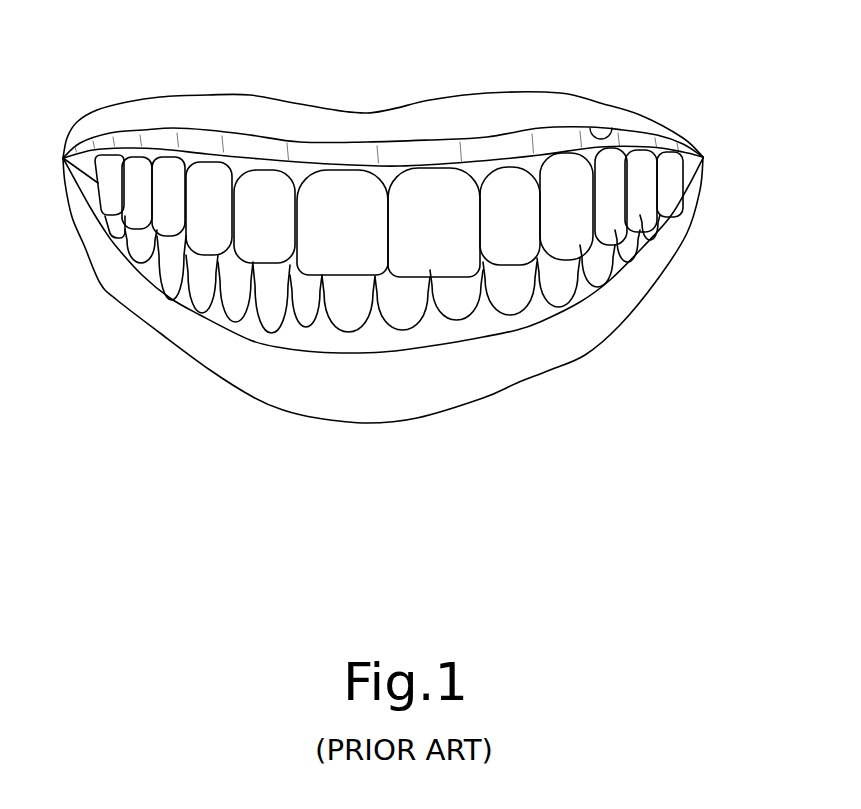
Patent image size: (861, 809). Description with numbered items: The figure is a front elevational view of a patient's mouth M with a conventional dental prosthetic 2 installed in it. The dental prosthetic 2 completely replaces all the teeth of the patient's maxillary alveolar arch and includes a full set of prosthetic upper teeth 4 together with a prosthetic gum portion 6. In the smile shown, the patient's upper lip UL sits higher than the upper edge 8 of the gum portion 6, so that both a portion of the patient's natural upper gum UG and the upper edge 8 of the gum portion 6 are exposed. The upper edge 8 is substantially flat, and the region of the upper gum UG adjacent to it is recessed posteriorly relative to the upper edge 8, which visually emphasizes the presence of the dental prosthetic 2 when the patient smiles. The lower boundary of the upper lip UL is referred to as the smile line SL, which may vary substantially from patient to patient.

The dental prosthetic 2 is at (134, 164).
The prosthetic maxillary or upper teeth 4 is at (347, 265).
The gum portion 6 is at (543, 163).
The upper edge 8 is at (330, 163).
The upper gum UG is at (192, 138).
The upper lip UL is at (465, 115).
The smile line SL is at (615, 128).
The patient's mouth M is at (747, 137).